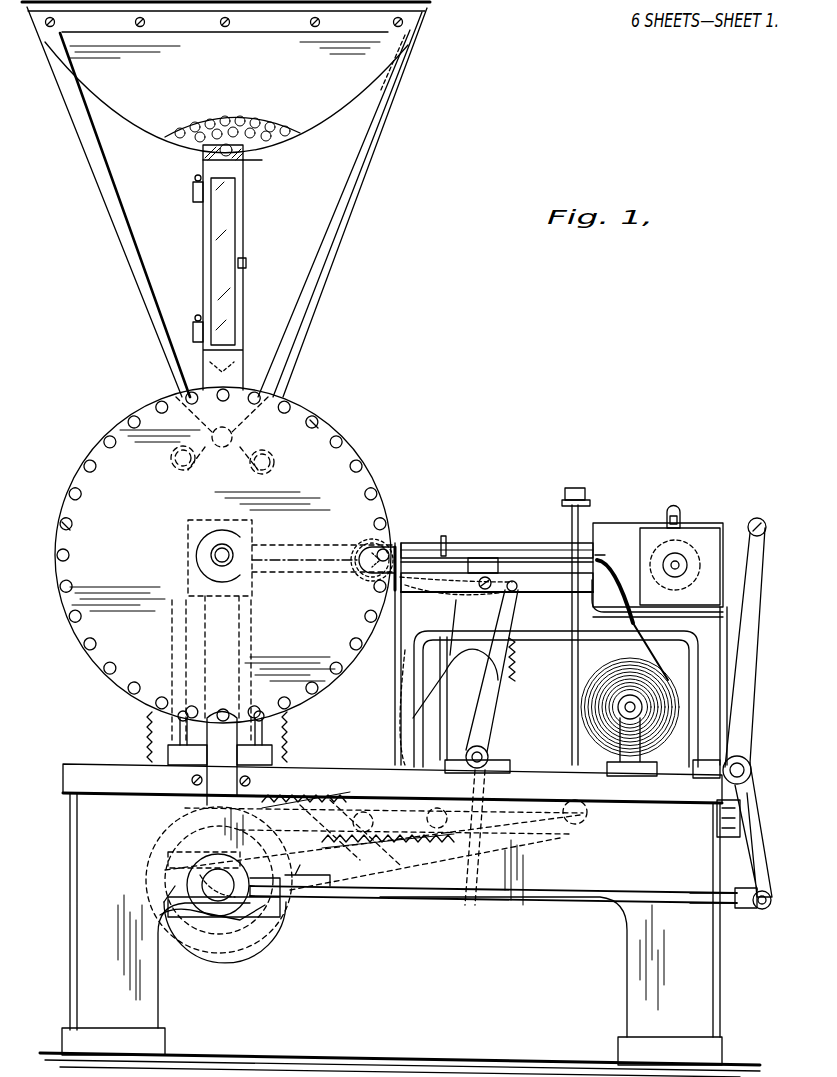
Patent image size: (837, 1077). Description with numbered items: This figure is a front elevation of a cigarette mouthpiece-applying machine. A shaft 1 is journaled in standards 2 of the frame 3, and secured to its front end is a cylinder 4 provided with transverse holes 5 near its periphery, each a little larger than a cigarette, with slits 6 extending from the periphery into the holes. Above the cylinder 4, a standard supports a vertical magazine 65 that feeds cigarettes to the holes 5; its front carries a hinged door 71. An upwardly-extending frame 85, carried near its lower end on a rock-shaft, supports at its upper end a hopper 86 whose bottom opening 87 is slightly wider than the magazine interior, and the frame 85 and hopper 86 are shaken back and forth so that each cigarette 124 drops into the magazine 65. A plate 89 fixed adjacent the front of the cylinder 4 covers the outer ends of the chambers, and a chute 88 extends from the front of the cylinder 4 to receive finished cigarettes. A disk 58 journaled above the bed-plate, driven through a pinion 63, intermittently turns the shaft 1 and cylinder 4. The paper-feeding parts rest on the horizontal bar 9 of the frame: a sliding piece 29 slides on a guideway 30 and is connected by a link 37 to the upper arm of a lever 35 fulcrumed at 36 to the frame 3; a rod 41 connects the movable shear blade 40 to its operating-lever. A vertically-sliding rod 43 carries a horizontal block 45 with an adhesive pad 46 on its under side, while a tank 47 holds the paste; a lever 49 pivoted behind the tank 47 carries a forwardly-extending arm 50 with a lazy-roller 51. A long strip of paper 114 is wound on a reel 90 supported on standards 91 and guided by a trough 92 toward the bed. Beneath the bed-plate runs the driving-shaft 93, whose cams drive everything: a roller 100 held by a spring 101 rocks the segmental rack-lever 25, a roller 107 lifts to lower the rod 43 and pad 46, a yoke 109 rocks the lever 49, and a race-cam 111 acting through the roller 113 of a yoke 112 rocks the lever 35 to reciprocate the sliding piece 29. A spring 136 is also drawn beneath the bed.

The shaft 1 is at (215, 557).
The standards 2 is at (200, 734).
The frame 3 is at (400, 920).
The cylinder 4 is at (210, 563).
The transverse holes 5 is at (340, 428).
The slits 6 is at (313, 420).
The horizontal bar 9 is at (561, 654).
The segmental rack-lever 25 is at (516, 680).
The sliding piece 29 is at (482, 557).
The guideway 30 is at (517, 543).
The lever 35 is at (494, 716).
The fulcrum 36 is at (489, 757).
The link 37 is at (506, 590).
The movable blade of the shears 40 is at (450, 533).
The rod 41 is at (458, 680).
The vertically-sliding rod 43 is at (574, 662).
The horizontal block 45 is at (574, 490).
The pad 46 is at (564, 503).
The tank 47 is at (648, 526).
The lever 49 is at (752, 806).
The forwardly-extending arm 50 is at (750, 526).
The lazy-roller 51 is at (680, 506).
The disk 58 is at (274, 742).
The pinion 63 is at (147, 722).
The vertical magazine 65 is at (245, 161).
The hinged door 71 is at (206, 258).
The upwardly-extending frame 85 is at (118, 237).
The hopper 86 is at (226, 92).
The opening 87 is at (212, 142).
The chute 88 is at (212, 778).
The plate 89 is at (395, 549).
The reel 90 is at (645, 708).
The standards 91 is at (630, 778).
The trough 92 is at (615, 574).
The driving-shaft 93 is at (205, 885).
The roller 100 is at (302, 895).
The spring 101 is at (318, 792).
The roller 107 is at (215, 843).
The yoke 109 is at (726, 910).
The race-cam 111 is at (205, 952).
The yoke 112 is at (252, 925).
The roller 113 is at (266, 935).
The strip of paper 114 is at (672, 660).
The cigarette 124 is at (172, 138).
The spring 136 is at (540, 836).